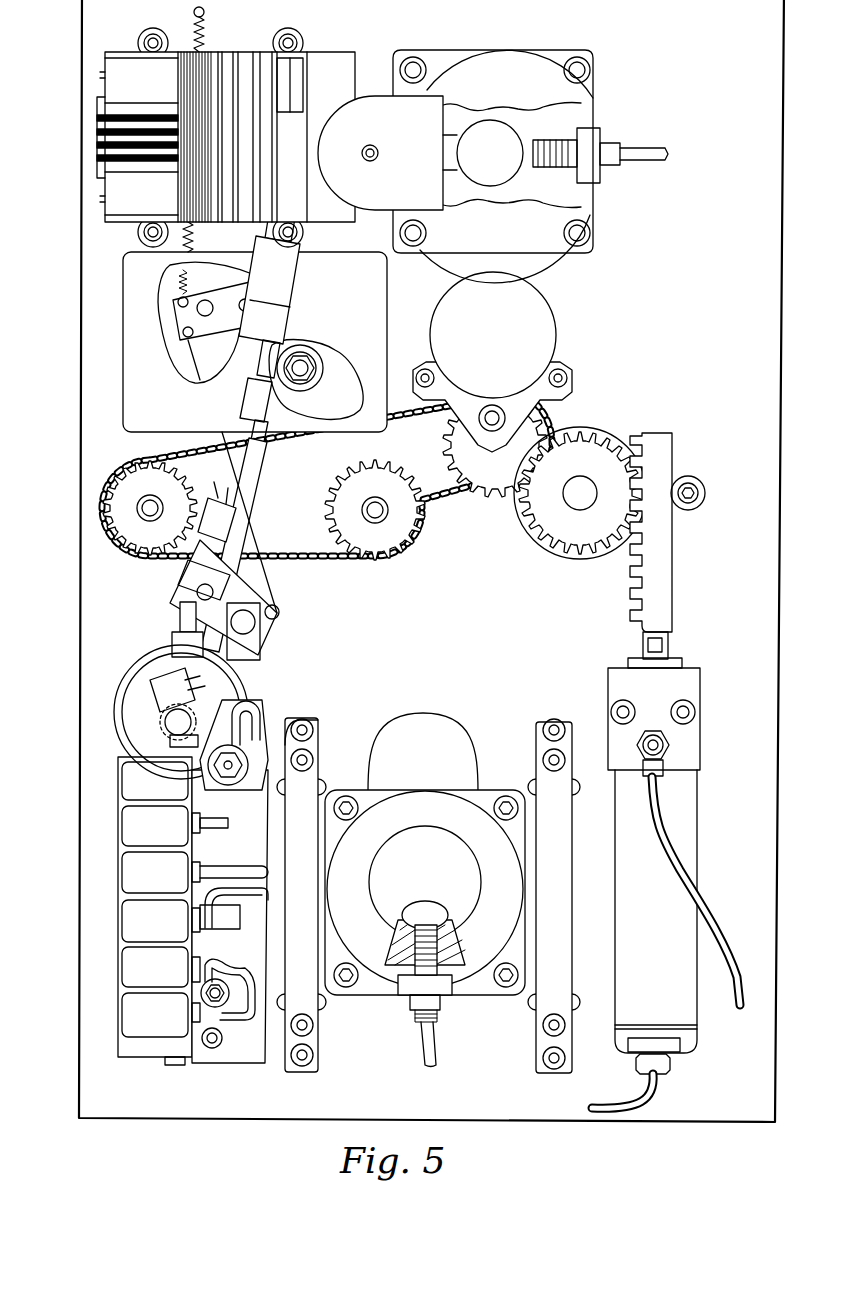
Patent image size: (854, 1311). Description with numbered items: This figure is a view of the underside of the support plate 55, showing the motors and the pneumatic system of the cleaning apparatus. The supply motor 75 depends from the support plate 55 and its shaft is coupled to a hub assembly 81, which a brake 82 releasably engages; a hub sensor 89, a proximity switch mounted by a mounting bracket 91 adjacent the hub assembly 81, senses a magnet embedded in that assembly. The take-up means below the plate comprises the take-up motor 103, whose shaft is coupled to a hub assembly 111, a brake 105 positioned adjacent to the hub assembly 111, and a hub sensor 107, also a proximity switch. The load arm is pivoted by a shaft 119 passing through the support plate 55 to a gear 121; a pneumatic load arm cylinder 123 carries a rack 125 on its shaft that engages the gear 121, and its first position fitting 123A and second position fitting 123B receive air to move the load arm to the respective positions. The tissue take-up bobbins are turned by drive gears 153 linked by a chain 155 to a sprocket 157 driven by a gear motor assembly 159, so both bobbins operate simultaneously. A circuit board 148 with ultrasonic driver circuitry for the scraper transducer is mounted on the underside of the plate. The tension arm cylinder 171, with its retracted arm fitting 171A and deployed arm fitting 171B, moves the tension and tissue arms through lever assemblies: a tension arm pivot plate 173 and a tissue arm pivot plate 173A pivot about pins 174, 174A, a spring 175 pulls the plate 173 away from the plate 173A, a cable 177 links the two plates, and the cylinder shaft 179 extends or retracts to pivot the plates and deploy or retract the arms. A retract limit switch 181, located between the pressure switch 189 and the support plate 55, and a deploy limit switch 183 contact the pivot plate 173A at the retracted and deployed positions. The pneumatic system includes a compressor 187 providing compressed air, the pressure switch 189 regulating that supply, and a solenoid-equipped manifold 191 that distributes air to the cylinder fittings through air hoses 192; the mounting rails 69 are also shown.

The support plate 55 is at (778, 218).
The mounting rails 69 is at (291, 1006).
The supply motor 75 is at (455, 852).
The hub assembly 81 is at (420, 912).
The brake 82 is at (423, 713).
The hub sensor 89 is at (440, 925).
The mounting bracket 91 is at (421, 1018).
The take-up motor 103 is at (502, 63).
The brake 105 is at (366, 105).
The hub sensor 107 is at (585, 135).
The hub assembly 111 is at (557, 112).
The shaft 119 is at (577, 486).
The gear 121 is at (600, 469).
The load arm cylinder 123 is at (681, 870).
The first position fitting 123A is at (660, 1070).
The second position fitting 123B is at (660, 745).
The rack 125 is at (666, 463).
The circuit board 148 is at (130, 298).
The drive gear 153 is at (140, 473).
The chain 155 is at (466, 500).
The sprocket 157 is at (445, 443).
The gear motor assembly 159 is at (547, 296).
The tension arm cylinder 171 is at (207, 847).
The retracted arm fitting 171A is at (287, 728).
The deployed arm fitting 171B is at (192, 995).
The tension arm pivot plate 173 is at (185, 318).
The tissue arm pivot plate 173A is at (180, 586).
The pin 174 is at (290, 302).
The pin 174A is at (180, 612).
The spring 175 is at (206, 28).
The cable 177 is at (240, 466).
The shaft 179 is at (240, 702).
The retract limit switch 181 is at (170, 648).
The deploy limit switch 183 is at (180, 560).
The compressor 187 is at (221, 128).
The pressure switch 189 is at (130, 712).
The manifold 191 is at (130, 925).
The air hoses 192 is at (156, 995).